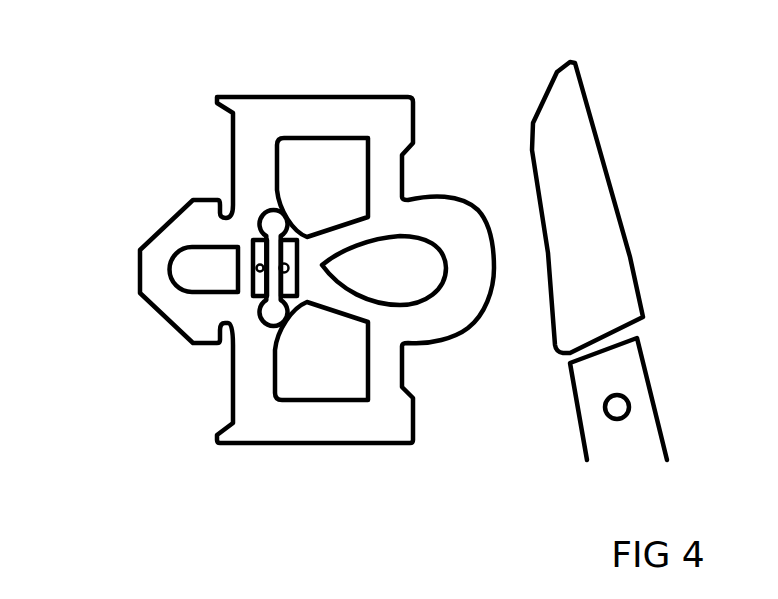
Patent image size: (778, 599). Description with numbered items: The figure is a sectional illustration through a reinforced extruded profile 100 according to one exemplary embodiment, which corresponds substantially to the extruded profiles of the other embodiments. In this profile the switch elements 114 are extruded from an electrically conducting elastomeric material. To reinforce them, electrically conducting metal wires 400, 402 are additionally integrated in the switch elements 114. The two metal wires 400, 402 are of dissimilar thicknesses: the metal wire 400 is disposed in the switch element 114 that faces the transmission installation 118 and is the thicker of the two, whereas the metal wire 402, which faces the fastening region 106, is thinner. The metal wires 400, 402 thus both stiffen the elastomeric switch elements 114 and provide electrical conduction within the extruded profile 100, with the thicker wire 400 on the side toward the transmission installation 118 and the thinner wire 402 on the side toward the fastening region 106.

The extruded profile 100 is at (216, 96).
The fastening region 106 is at (130, 265).
The switch elements 114 is at (284, 239).
The transmission installation 118 is at (450, 195).
The metal wire 400 is at (246, 329).
The metal wire 402 is at (264, 305).